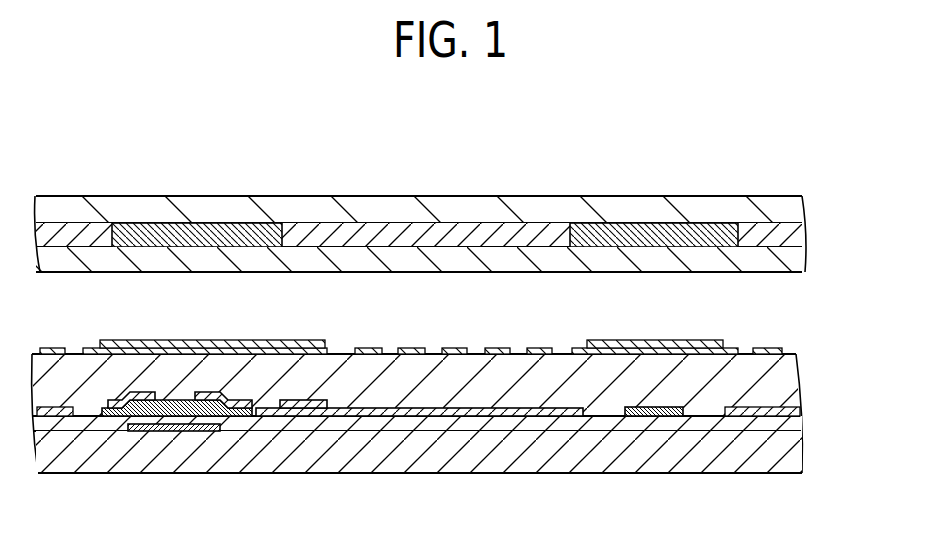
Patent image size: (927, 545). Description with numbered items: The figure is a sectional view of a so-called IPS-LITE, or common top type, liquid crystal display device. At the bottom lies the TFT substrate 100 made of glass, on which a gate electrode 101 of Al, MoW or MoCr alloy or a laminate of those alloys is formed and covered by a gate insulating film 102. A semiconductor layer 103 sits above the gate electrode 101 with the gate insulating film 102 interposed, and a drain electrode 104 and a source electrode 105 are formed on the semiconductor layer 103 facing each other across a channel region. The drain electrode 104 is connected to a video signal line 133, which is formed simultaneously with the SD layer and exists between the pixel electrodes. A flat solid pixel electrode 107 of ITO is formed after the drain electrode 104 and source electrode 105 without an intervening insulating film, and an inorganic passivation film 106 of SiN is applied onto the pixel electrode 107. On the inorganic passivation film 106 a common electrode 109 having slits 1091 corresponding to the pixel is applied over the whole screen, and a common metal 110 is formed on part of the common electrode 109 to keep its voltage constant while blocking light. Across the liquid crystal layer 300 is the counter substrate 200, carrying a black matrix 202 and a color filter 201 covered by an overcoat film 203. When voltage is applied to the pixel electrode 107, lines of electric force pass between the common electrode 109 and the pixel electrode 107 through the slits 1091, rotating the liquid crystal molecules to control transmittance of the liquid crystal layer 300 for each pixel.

The TFT substrate 100 is at (792, 459).
The gate electrode 101 is at (173, 432).
The gate insulating film 102 is at (790, 426).
The semiconductor layer 103 is at (165, 398).
The drain electrode 104 is at (110, 400).
The source electrode 105 is at (240, 398).
The inorganic passivation film 106 is at (783, 381).
The pixel electrode 107 is at (437, 414).
The common electrode 109 is at (770, 343).
The slits 1091 is at (520, 350).
The common metal 110 is at (231, 342).
The video signal line 133 is at (665, 408).
The counter substrate 200 is at (792, 211).
The color filter 201 is at (512, 237).
The black matrix 202 is at (625, 235).
The overcoat film 203 is at (793, 257).
The liquid crystal layer 300 is at (417, 292).